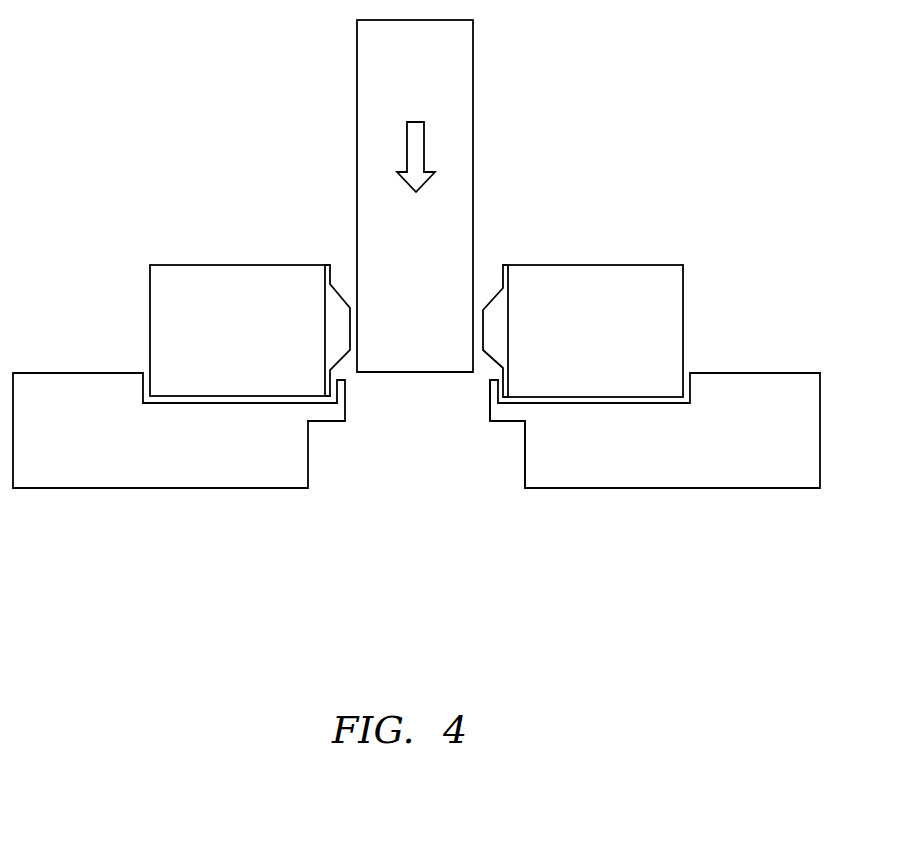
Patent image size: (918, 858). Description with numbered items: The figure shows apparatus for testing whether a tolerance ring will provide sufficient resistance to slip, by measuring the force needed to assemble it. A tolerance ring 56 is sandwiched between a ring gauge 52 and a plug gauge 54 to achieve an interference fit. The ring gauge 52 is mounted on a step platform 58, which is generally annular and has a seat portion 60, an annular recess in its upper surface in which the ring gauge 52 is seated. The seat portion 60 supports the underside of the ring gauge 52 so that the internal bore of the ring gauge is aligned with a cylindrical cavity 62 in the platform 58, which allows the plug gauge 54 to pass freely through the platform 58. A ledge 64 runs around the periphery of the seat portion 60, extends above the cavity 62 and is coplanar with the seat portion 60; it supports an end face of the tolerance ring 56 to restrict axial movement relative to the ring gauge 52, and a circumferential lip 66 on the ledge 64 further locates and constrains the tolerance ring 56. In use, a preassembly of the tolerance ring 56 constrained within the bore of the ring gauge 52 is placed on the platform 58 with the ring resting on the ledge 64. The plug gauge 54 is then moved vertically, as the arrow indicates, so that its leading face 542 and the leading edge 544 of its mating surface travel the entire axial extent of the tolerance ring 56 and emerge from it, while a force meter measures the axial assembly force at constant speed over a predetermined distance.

The ring gauge 52 is at (632, 264).
The plug gauge 54 is at (473, 98).
The leading face 542 is at (420, 375).
The leading edge 544 is at (358, 380).
The tolerance ring 56 is at (495, 292).
The step platform 58 is at (718, 372).
The seat portion 60 is at (200, 404).
The cylindrical cavity 62 is at (523, 465).
The ledge 64 is at (492, 422).
The circumferential lip 66 is at (488, 390).